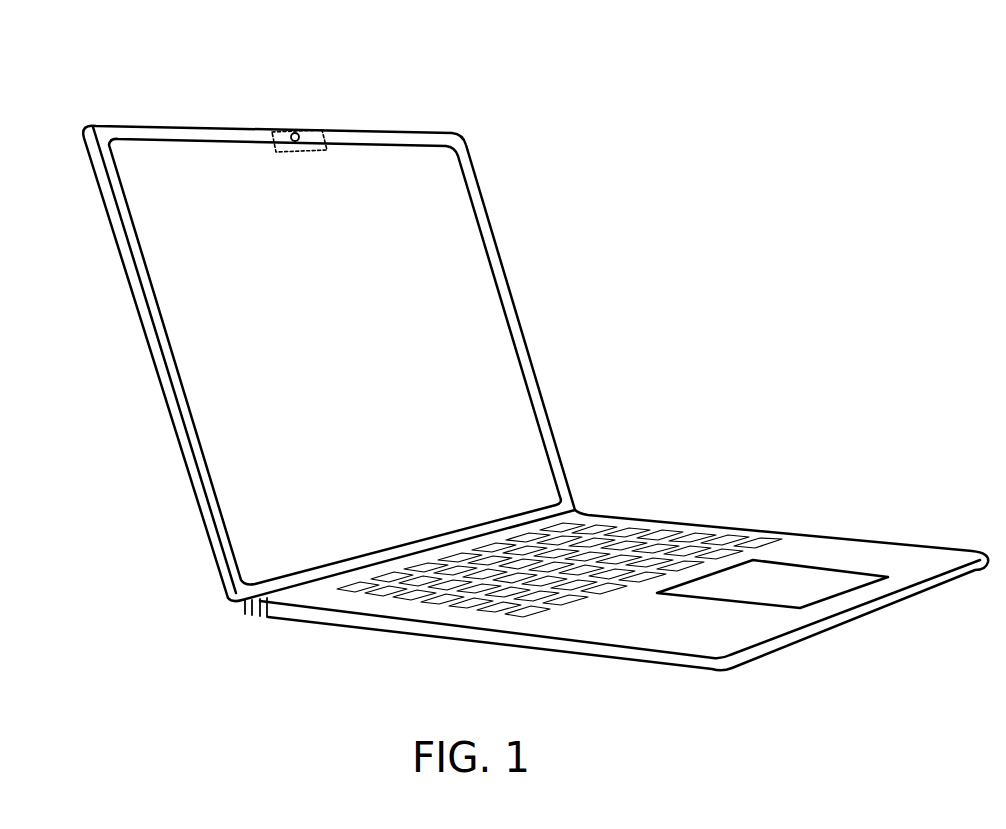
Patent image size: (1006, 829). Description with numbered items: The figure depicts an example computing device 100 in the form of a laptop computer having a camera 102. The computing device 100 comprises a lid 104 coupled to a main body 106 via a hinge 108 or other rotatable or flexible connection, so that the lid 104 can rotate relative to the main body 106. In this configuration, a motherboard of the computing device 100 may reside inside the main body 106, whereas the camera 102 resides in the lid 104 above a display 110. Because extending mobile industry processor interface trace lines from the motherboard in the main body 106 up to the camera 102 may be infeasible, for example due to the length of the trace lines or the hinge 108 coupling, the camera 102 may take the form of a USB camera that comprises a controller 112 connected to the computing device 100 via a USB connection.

The computing device 100 is at (573, 84).
The camera 102 is at (294, 131).
The lid 104 is at (481, 192).
The main body 106 is at (318, 624).
The hinge 108 is at (238, 597).
The display 110 is at (218, 171).
The controller 112 is at (312, 153).